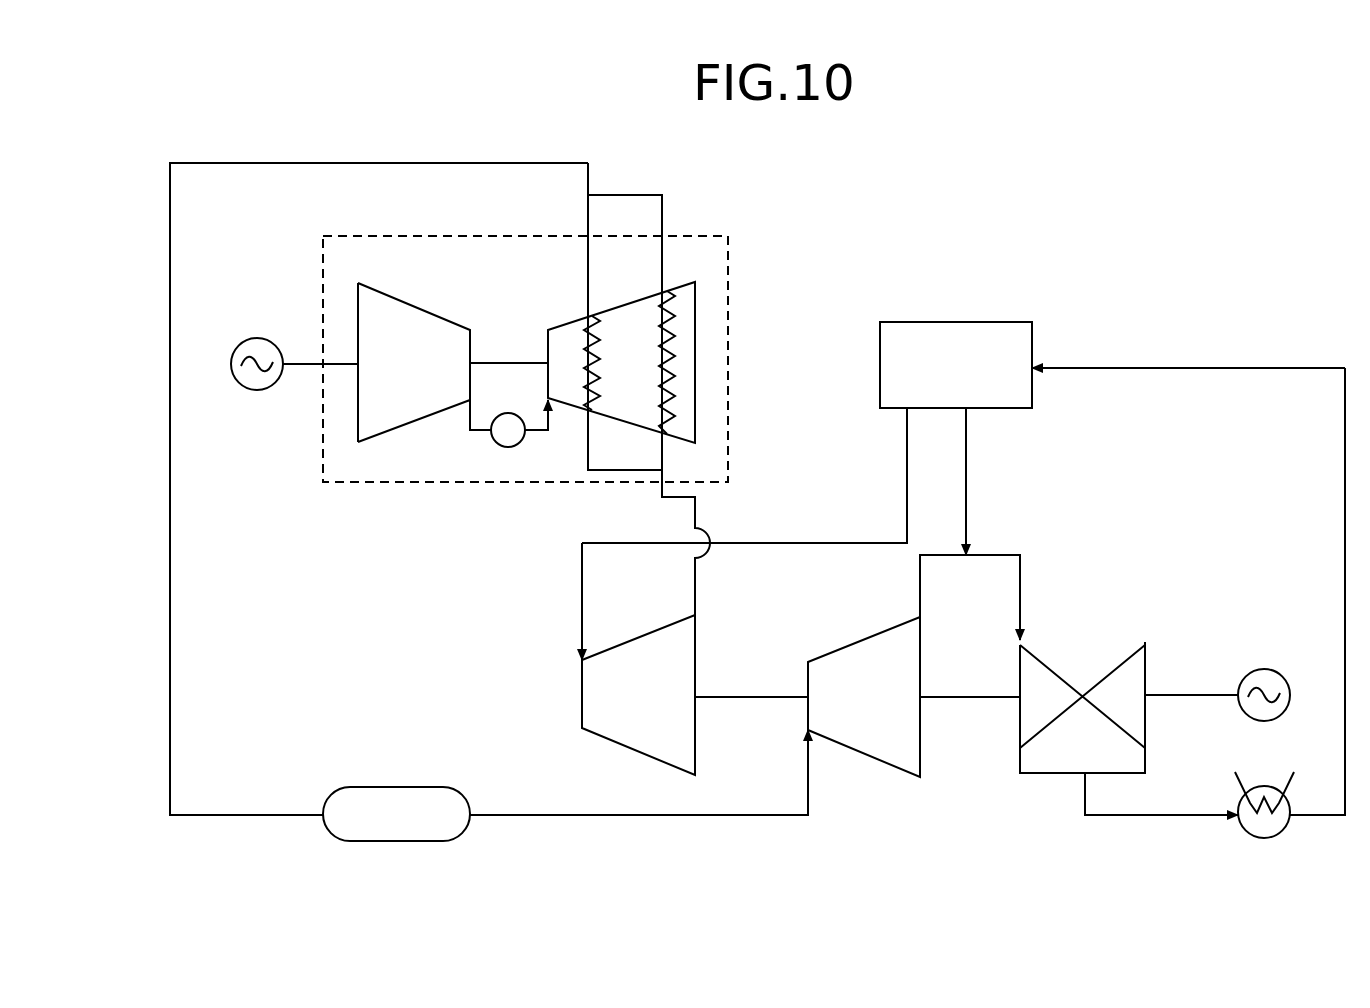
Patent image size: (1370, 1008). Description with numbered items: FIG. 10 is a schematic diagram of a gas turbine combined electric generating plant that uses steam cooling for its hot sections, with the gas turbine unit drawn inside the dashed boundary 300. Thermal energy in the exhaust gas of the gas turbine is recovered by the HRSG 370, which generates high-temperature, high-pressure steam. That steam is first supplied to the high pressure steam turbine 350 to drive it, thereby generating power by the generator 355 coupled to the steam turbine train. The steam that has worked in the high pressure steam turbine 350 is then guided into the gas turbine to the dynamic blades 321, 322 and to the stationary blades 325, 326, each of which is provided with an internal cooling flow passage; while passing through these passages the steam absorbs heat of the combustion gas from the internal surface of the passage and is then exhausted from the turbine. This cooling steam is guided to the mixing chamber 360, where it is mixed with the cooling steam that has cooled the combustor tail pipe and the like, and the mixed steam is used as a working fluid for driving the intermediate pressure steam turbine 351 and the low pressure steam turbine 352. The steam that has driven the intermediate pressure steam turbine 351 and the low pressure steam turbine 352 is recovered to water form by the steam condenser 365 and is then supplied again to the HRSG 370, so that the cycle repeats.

The gas turbine unit 300 is at (712, 233).
The dynamic blade 321 is at (473, 351).
The compressor 322 is at (588, 333).
The stationary blade 325 is at (704, 368).
The turbine 326 is at (670, 405).
The high pressure steam turbine 350 is at (698, 633).
The intermediate pressure steam turbine 351 is at (922, 635).
The low pressure steam turbine 352 is at (1105, 665).
The generator 355 is at (1262, 668).
The mixing chamber 360 is at (403, 787).
The steam condenser 365 is at (1267, 840).
The HRSG (Heat Recovery Steam Generator) 370 is at (958, 322).